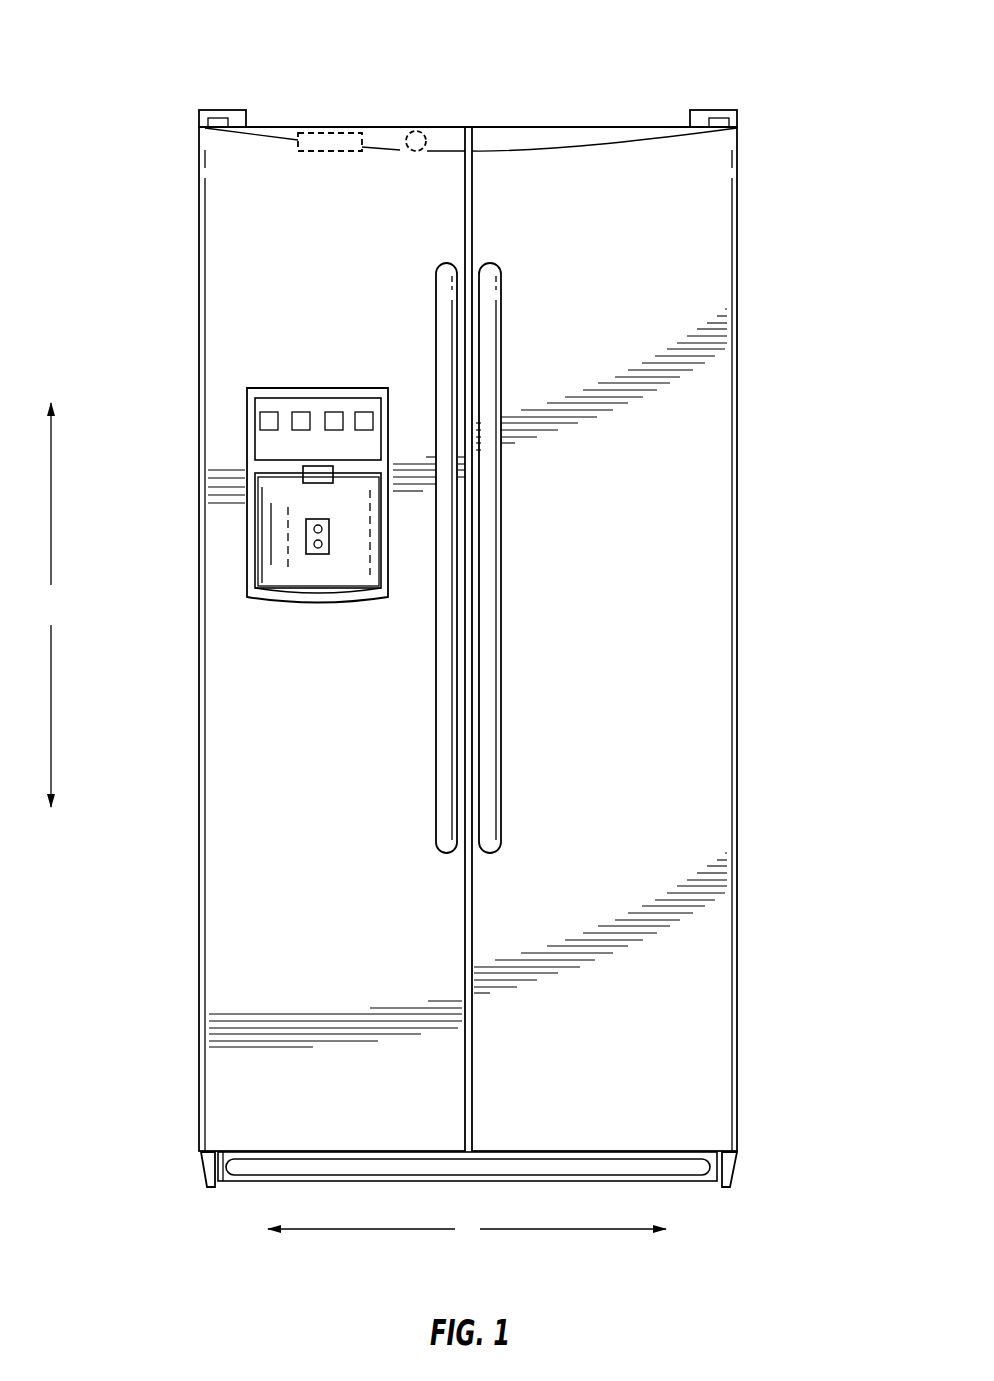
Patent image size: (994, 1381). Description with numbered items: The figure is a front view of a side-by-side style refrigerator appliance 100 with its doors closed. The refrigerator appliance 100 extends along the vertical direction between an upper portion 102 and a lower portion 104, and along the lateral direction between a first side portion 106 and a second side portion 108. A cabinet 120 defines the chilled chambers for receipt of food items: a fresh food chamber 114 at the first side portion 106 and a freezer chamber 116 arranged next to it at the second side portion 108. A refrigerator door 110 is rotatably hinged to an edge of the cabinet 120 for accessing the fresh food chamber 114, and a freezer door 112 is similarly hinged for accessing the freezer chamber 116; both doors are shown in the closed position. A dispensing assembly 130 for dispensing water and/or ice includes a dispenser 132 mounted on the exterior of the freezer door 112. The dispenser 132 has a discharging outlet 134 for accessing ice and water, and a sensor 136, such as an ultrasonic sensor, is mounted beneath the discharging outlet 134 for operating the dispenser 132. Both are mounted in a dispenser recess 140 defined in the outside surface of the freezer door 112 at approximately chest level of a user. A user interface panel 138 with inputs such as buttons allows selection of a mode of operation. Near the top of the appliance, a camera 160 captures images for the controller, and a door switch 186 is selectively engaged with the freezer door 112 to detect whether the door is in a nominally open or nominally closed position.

The refrigerator appliance 100 is at (473, 649).
The upper portion 102 is at (178, 116).
The lower portion 104 is at (444, 1195).
The first side portion 106 is at (730, 1208).
The second side portion 108 is at (207, 1208).
The refrigerator door 110 is at (641, 639).
The freezer door 112 is at (281, 639).
The fresh food chamber 114 is at (688, 222).
The freezer chamber 116 is at (242, 223).
The cabinet 120 is at (200, 920).
The dispensing assembly 130 is at (249, 499).
The dispenser 132 is at (358, 578).
The discharging outlet 134 is at (306, 487).
The sensor 136 is at (305, 542).
The user interface panel 138 is at (283, 405).
The dispenser recess 140 is at (318, 578).
The camera 160 is at (325, 131).
The door switch 186 is at (416, 131).